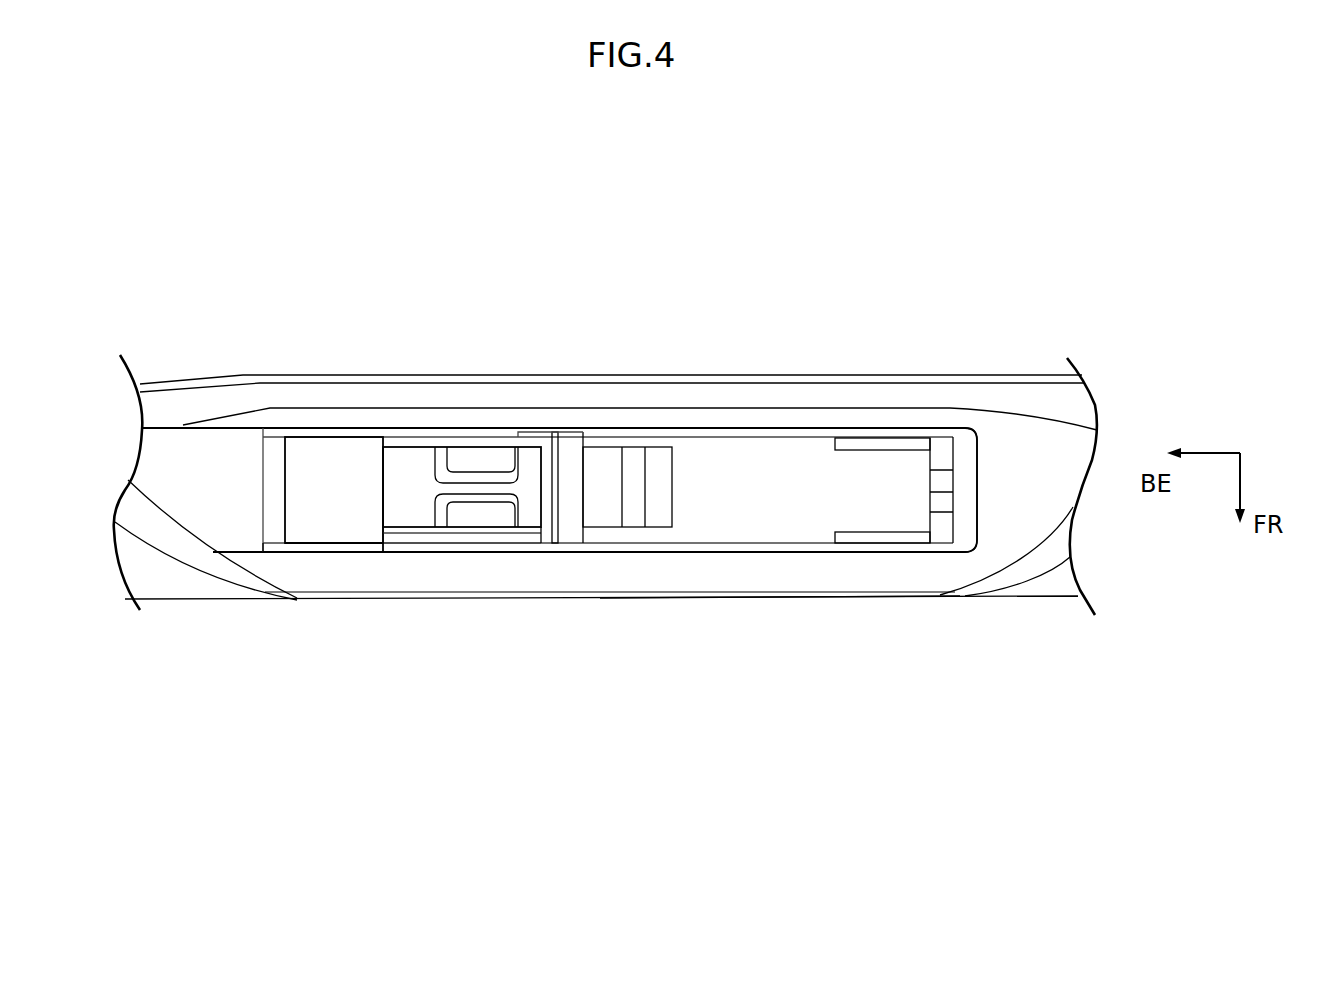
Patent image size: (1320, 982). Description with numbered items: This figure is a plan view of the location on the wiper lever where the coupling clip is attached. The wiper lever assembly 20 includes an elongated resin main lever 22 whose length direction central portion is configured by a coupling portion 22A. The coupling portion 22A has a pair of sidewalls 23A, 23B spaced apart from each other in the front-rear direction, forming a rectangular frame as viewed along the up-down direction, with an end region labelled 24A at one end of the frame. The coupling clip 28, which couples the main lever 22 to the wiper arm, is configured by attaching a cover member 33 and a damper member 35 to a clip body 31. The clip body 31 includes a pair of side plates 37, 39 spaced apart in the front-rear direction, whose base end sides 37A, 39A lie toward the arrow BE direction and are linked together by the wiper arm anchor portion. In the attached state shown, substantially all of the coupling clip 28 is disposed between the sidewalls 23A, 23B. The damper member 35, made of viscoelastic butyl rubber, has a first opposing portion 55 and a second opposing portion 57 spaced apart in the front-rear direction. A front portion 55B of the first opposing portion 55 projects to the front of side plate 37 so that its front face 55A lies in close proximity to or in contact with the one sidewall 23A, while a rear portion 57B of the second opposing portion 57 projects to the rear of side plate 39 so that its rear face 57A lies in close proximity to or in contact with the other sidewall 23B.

The wiper lever assembly 20 is at (935, 193).
The main lever 22 is at (863, 602).
The coupling portion 22A is at (787, 577).
The sidewall 23A is at (605, 570).
The sidewall 23B is at (550, 388).
The end wall 24A is at (962, 484).
The coupling clip 28 is at (566, 460).
The clip body 31 is at (481, 458).
The cover member 33 is at (760, 487).
The damper member 35 is at (282, 551).
The side plate 37 is at (440, 540).
The base end side 37A is at (462, 613).
The side plate 39 is at (407, 438).
The base end side 39A is at (429, 403).
The first opposing portion 55 is at (332, 552).
The front face 55A is at (407, 649).
The front portion 55B is at (363, 553).
The second opposing portion 57 is at (277, 389).
The rear face 57A is at (308, 389).
The rear portion 57B is at (328, 428).